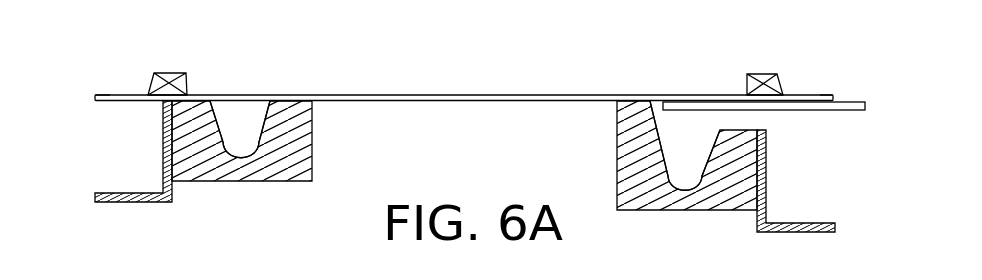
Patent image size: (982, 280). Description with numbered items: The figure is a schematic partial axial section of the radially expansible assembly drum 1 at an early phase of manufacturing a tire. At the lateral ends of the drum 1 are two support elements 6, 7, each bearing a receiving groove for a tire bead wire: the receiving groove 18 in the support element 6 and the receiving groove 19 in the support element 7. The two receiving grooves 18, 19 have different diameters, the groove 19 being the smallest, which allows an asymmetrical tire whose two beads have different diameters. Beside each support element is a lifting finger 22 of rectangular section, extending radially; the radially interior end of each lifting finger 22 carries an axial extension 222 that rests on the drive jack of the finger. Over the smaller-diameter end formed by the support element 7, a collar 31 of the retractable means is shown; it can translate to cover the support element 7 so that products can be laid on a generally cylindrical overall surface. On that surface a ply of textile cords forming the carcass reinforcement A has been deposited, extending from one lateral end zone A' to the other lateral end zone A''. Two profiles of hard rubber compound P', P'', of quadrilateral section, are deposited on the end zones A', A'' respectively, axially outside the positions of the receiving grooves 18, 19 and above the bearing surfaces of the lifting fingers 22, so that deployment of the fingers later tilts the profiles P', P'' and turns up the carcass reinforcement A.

The assembly drum 1 is at (513, 157).
The support element 6 is at (295, 110).
The support element 7 is at (632, 110).
The receiving groove 18 is at (255, 138).
The receiving groove 19 is at (703, 155).
The lifting finger 22 is at (163, 163).
The axial extension 222 is at (803, 223).
The collar 31 is at (802, 107).
The carcass reinforcement A is at (464, 62).
The lateral end zone A' is at (88, 125).
The lateral end zone A'' is at (858, 57).
The profile of rubber compound P' is at (196, 58).
The profile of rubber compound P'' is at (765, 55).